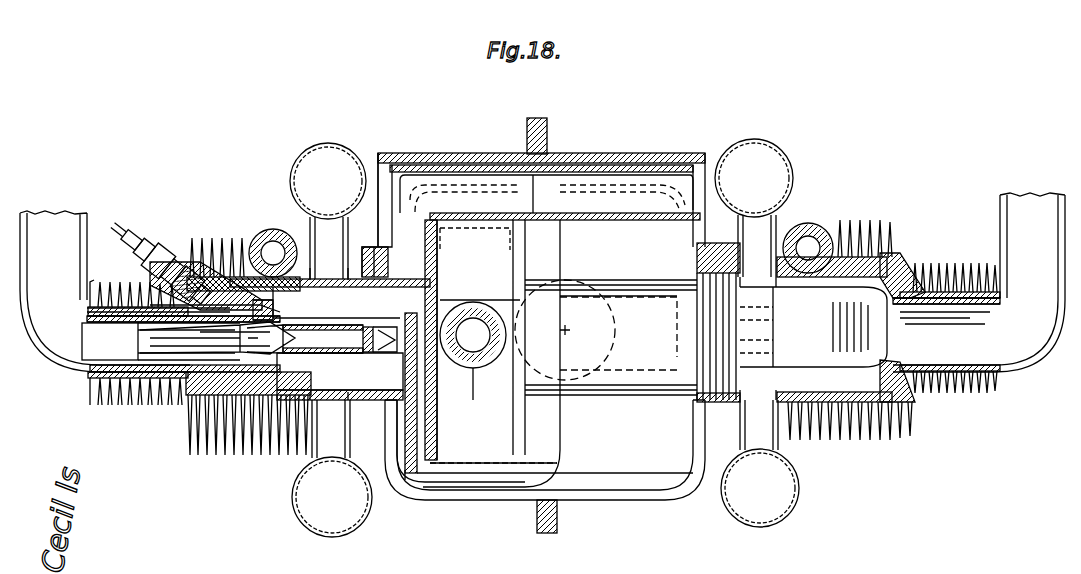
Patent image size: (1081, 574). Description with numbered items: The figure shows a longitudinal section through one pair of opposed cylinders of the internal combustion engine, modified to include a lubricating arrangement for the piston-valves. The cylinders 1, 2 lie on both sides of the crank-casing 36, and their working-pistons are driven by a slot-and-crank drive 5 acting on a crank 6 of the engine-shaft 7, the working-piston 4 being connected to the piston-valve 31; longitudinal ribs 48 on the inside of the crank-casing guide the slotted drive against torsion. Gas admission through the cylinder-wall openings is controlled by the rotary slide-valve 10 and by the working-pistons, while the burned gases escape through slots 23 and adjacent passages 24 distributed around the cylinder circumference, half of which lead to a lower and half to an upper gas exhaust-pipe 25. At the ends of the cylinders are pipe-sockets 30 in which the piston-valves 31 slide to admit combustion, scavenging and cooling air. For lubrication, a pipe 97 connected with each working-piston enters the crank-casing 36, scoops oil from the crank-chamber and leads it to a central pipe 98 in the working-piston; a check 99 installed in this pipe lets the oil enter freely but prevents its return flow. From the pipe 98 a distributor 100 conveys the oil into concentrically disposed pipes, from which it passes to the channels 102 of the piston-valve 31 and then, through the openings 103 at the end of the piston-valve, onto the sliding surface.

The cylinder 1 is at (213, 246).
The cylinder 2 is at (895, 244).
The working-piston 4 is at (648, 390).
The slot-and-crank drive 5 is at (550, 442).
The crank 6 is at (458, 312).
The engine-shaft 7 is at (568, 328).
The rotary slide-valve 10 is at (262, 233).
The slot 23 is at (320, 268).
The passage 24 is at (322, 227).
The gas exhaust-pipe 25 is at (336, 145).
The pipe-socket 30 is at (132, 403).
The piston-valve 31 is at (186, 406).
The crank-casing 36 is at (633, 150).
The longitudinal rib 48 is at (620, 472).
The pipe 97 is at (422, 472).
The central pipe 98 is at (330, 299).
The check 99 is at (373, 353).
The distributor 100 is at (277, 326).
The channel 102 is at (110, 324).
The opening 103 is at (88, 318).